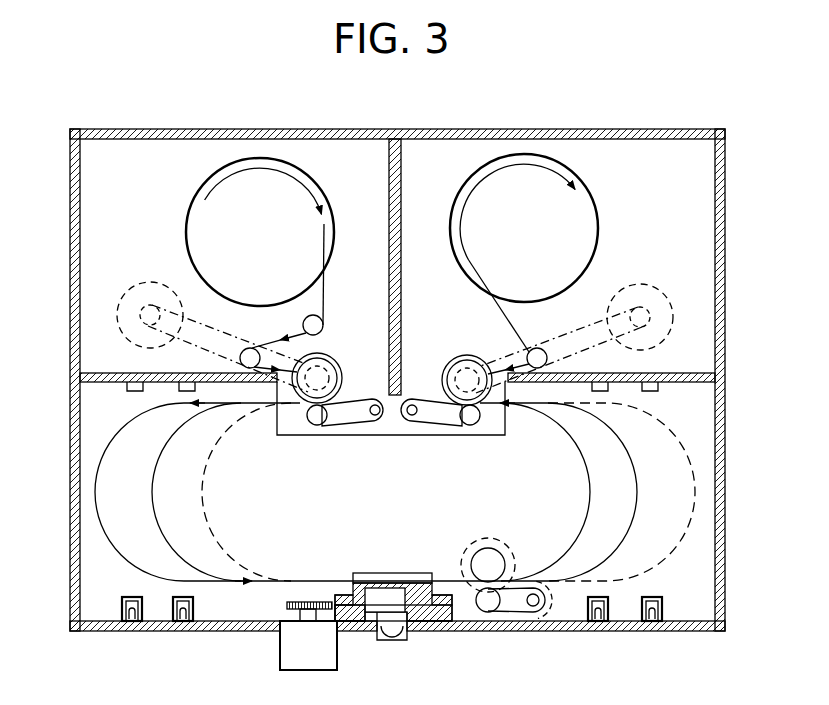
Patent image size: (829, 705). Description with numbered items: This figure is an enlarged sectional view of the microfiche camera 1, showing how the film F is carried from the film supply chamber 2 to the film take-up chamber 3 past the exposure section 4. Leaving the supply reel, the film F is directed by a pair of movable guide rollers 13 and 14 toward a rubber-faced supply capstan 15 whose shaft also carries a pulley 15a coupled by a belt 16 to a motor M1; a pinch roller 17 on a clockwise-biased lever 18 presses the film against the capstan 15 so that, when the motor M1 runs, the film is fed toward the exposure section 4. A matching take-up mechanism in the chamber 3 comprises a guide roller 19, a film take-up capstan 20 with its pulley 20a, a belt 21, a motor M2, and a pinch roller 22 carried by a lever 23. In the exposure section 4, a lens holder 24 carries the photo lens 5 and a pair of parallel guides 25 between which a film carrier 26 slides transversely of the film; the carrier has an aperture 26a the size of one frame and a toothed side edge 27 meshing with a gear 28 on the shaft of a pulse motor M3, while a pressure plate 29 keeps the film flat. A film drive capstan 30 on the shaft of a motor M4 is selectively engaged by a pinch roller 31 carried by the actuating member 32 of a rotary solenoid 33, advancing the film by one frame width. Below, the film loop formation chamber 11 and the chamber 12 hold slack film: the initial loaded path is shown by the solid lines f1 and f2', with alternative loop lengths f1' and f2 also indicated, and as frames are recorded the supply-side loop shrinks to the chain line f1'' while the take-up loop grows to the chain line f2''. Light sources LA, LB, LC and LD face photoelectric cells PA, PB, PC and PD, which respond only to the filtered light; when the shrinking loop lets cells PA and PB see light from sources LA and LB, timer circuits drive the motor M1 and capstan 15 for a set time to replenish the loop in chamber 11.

The microfiche camera 1 is at (635, 124).
The film supply chamber 2 is at (160, 150).
The film take-up chamber 3 is at (445, 137).
The exposure section 4 is at (409, 597).
The photo lens 5 is at (386, 641).
The film loop formation chamber 11 is at (80, 582).
The chamber 12 is at (715, 592).
The movable guide roller 13 is at (323, 325).
The movable guide roller 14 is at (248, 349).
The supply capstan 15 is at (335, 362).
The pulley 15a is at (338, 373).
The belt 16 is at (218, 354).
The pinch roller 17 is at (318, 426).
The lever 18 is at (355, 423).
The guide roller 19 is at (540, 348).
The film take-up capstan 20 is at (467, 372).
The pulley 20a is at (456, 373).
The belt 21 is at (578, 350).
The pinch roller 22 is at (472, 426).
The lever 23 is at (432, 425).
The lens holder 24 is at (444, 618).
The parallel guides 25 is at (343, 596).
The film carrier 26 is at (425, 614).
The aperture 26a is at (388, 588).
The toothed side edge 27 is at (348, 618).
The gear 28 is at (305, 601).
The pressure plate 29 is at (416, 574).
The film drive capstan 30 is at (496, 560).
The pinch roller 31 is at (488, 613).
The actuating member 32 is at (528, 613).
The rotary solenoid 33 is at (553, 614).
The film F is at (328, 228).
The motor M1 is at (150, 300).
The motor M2 is at (642, 300).
The pulse motor M3 is at (283, 652).
The motor M4 is at (503, 542).
The photoelectric cell PA is at (133, 391).
The photoelectric cell PB is at (187, 393).
The photoelectric cell PC is at (605, 393).
The photoelectric cell PD is at (656, 392).
The light source LA is at (122, 611).
The light source LB is at (194, 609).
The light source LC is at (610, 610).
The light source LD is at (663, 610).
The film path f1 is at (315, 492).
The film loop line f1' is at (229, 492).
The chain line f1'' is at (177, 492).
The film loop line f2 is at (593, 492).
The film path f2' is at (561, 492).
The chain line f2'' is at (614, 492).